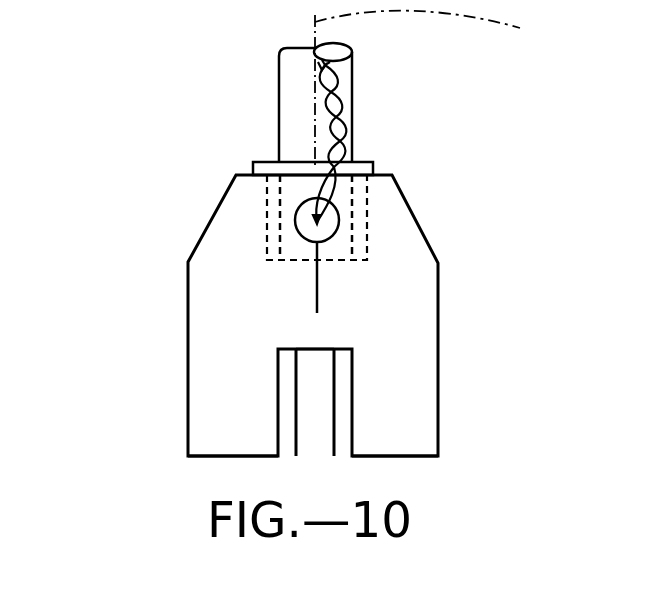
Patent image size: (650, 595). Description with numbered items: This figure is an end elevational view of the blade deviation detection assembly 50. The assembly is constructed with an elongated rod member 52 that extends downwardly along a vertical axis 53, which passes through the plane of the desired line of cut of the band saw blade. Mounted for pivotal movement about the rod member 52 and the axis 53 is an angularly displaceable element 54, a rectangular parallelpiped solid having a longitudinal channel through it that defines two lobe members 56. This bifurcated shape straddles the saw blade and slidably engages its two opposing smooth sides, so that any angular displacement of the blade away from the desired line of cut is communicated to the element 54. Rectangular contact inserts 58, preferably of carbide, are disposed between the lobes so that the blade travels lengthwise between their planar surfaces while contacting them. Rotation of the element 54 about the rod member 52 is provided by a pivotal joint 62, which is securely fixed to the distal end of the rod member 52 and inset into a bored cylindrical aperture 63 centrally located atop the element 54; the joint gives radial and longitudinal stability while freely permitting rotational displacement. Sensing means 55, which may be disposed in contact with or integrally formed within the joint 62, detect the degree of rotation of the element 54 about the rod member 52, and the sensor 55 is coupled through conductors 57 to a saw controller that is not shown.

The blade deviation detection assembly 50 is at (390, 99).
The elongated rod member 52 is at (279, 103).
The vertical axis 53 is at (439, 88).
The angularly displaceable element 54 is at (440, 366).
The sensing means 55 is at (339, 236).
The lobe members 56 is at (236, 430).
The conductors 57 is at (346, 140).
The rectangular contact inserts 58 is at (343, 390).
The pivotal joint 62 is at (263, 162).
The bored cylindrical aperture 63 is at (270, 222).